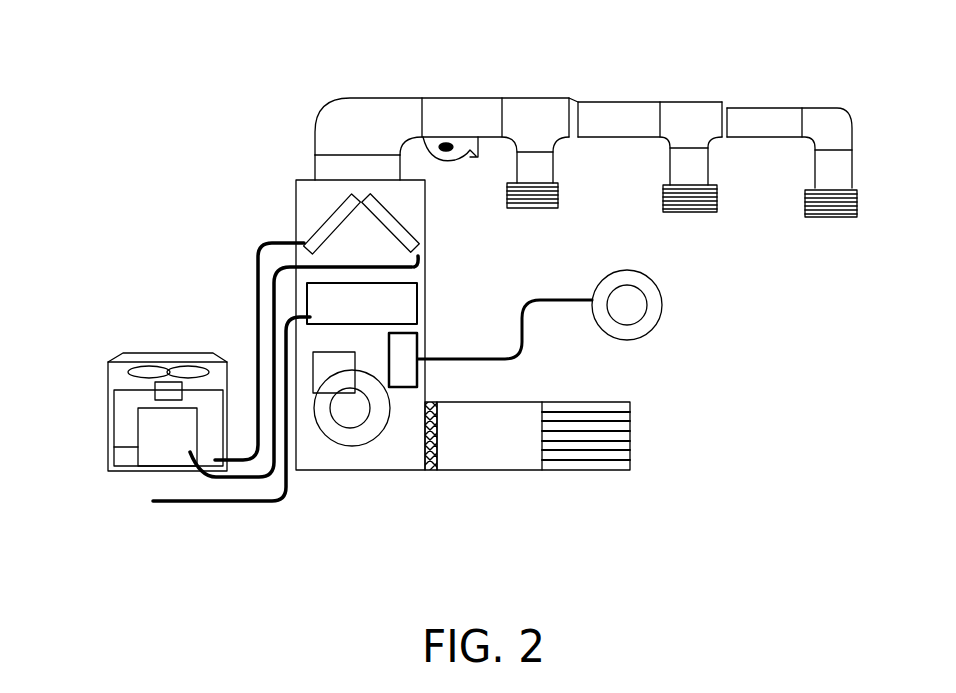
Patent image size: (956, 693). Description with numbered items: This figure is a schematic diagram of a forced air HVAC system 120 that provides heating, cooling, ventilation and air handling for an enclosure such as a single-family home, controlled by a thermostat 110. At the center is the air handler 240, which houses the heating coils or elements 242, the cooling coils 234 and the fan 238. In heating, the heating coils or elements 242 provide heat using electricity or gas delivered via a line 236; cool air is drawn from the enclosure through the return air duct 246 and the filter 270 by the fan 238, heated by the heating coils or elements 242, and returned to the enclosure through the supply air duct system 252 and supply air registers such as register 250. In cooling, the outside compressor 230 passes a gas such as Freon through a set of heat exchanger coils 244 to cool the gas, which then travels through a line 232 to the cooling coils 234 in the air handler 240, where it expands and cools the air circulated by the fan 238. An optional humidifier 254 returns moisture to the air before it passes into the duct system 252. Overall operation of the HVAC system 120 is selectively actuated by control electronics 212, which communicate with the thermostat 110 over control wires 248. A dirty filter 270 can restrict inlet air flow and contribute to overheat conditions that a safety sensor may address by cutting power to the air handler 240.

The thermostat 110 is at (662, 300).
The HVAC system 120 is at (771, 403).
The control electronics 212 is at (417, 343).
The outside compressor 230 is at (108, 385).
The line 232 is at (256, 272).
The cooling coils 234 is at (317, 220).
The line 236 is at (261, 501).
The fan 238 is at (358, 440).
The air handler 240 is at (295, 180).
The heating coils or elements 242 is at (417, 295).
The heat exchanger coils 244 is at (108, 448).
The return air duct 246 is at (630, 443).
The control wires 248 is at (523, 340).
The supply air register 250 is at (558, 192).
The supply air duct system 252 is at (615, 102).
The humidifier 254 is at (448, 160).
The filter 270 is at (417, 390).